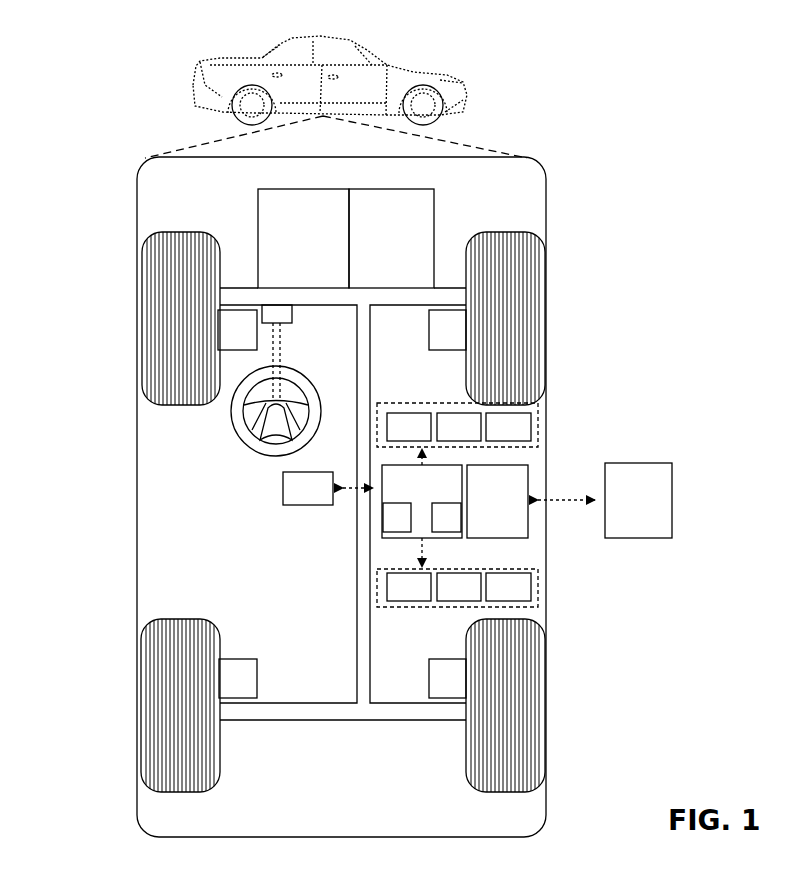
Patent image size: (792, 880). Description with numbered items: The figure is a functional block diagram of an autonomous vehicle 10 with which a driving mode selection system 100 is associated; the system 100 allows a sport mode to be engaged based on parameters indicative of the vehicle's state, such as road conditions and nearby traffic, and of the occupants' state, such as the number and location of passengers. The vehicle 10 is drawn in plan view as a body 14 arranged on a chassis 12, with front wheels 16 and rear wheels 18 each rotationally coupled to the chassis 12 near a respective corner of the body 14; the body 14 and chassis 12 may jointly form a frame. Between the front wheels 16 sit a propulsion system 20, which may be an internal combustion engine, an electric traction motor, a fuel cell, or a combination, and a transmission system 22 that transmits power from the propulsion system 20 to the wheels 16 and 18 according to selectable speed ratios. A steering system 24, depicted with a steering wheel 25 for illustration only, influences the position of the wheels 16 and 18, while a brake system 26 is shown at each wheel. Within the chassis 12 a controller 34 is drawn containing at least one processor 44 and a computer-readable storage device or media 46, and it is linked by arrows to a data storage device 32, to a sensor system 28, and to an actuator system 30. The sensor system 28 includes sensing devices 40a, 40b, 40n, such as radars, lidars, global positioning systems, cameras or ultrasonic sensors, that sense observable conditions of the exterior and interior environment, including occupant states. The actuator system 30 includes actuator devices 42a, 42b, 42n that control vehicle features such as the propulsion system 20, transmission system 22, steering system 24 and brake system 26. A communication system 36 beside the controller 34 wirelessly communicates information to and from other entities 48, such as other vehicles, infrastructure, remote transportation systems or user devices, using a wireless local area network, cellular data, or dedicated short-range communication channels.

The vehicle 10 is at (197, 78).
The chassis 12 is at (366, 722).
The body 14 is at (137, 464).
The front wheels 16 is at (165, 306).
The rear wheels 18 is at (165, 707).
The propulsion system 20 is at (292, 246).
The transmission system 22 is at (380, 246).
The steering system 24 is at (259, 394).
The steering wheel 25 is at (305, 373).
The brake system 26 is at (227, 339).
The sensor system 28 is at (457, 406).
The actuator system 30 is at (457, 609).
The data storage device 32 is at (297, 497).
The controller 34 is at (411, 497).
The communication system 36 is at (486, 509).
The sensing device 40a is at (393, 436).
The sensing device 40b is at (443, 436).
The sensing device 40n is at (492, 436).
The actuator device 42a is at (393, 596).
The actuator device 42b is at (443, 596).
The actuator device 42n is at (492, 596).
The processor 44 is at (386, 526).
The computer-readable storage device or media 46 is at (435, 526).
The other entities 48 is at (627, 509).
The driving mode selection system 100 is at (572, 350).